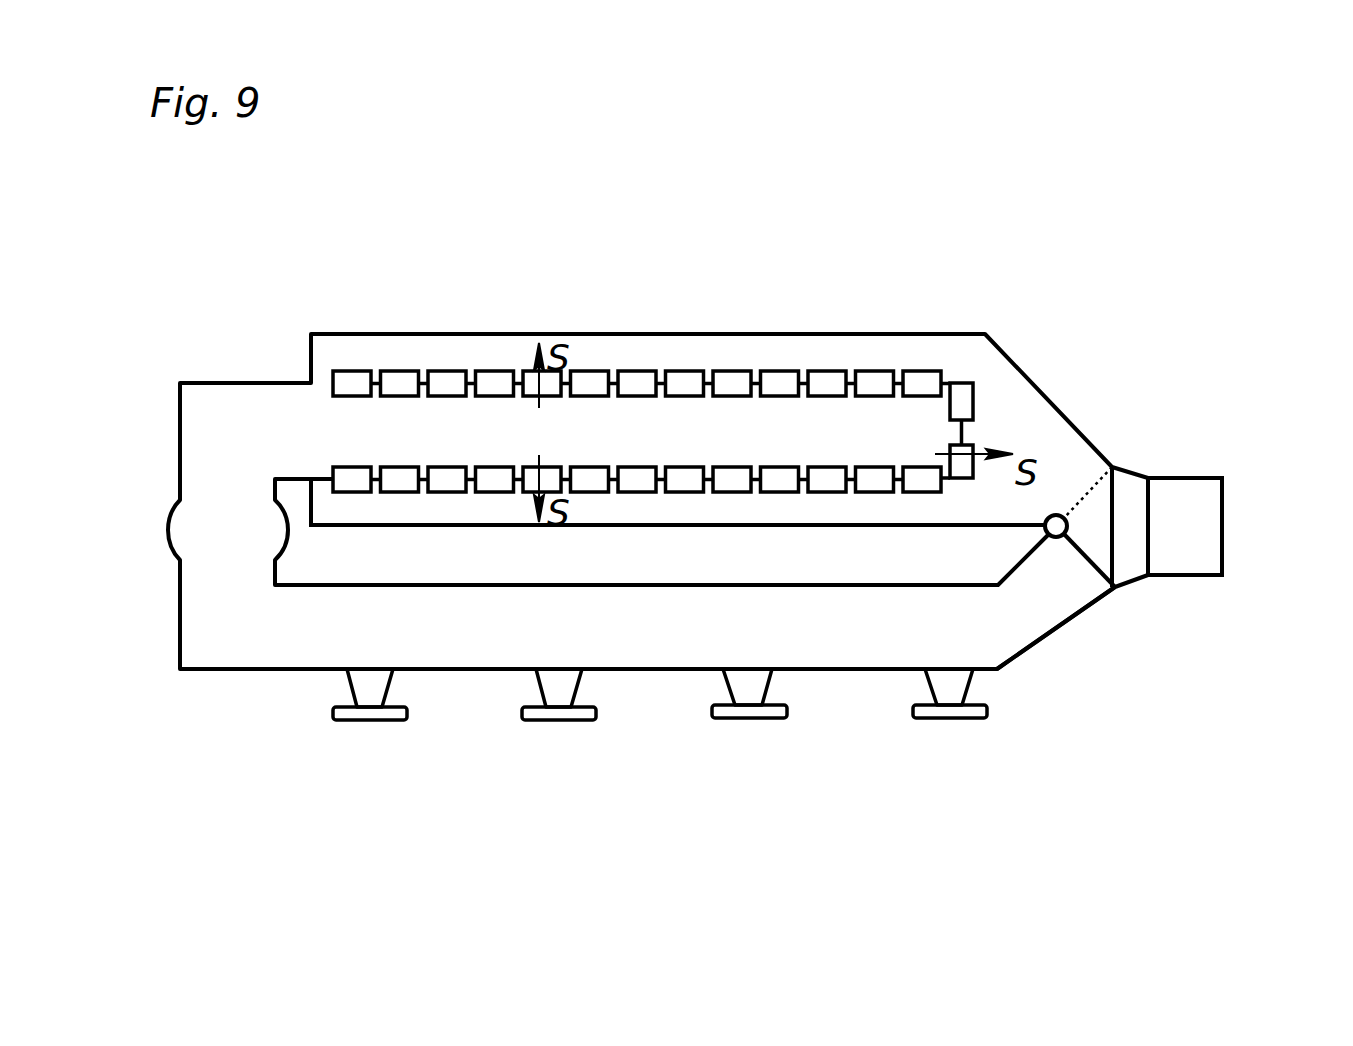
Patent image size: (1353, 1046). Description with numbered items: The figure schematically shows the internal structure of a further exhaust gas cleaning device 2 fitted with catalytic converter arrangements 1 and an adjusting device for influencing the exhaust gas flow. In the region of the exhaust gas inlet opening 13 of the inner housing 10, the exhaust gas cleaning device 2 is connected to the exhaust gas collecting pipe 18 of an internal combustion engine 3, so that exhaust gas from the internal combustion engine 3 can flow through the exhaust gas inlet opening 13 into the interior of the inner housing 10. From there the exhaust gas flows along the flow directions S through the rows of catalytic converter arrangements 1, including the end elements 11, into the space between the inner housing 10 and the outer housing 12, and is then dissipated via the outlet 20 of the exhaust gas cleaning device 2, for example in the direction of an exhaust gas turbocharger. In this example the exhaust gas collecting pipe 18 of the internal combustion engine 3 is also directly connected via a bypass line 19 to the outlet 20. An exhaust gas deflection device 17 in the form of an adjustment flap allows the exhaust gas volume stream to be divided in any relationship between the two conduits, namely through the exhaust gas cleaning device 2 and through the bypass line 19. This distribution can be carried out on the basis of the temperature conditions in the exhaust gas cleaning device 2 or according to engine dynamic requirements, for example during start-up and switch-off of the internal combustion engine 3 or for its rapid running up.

The catalytic converter arrangement 1 is at (352, 378).
The exhaust gas cleaning device 2 is at (1010, 316).
The internal combustion engine 3 is at (368, 744).
The inner housing 10 is at (965, 432).
The end converter element 11 is at (945, 382).
The outer housing 12 is at (617, 333).
The exhaust gas inlet opening 13 is at (318, 432).
The exhaust gas deflection device 17 is at (1095, 570).
The exhaust gas collecting pipe 18 is at (668, 650).
The bypass line 19 is at (1033, 620).
The outlet 20 is at (1202, 528).